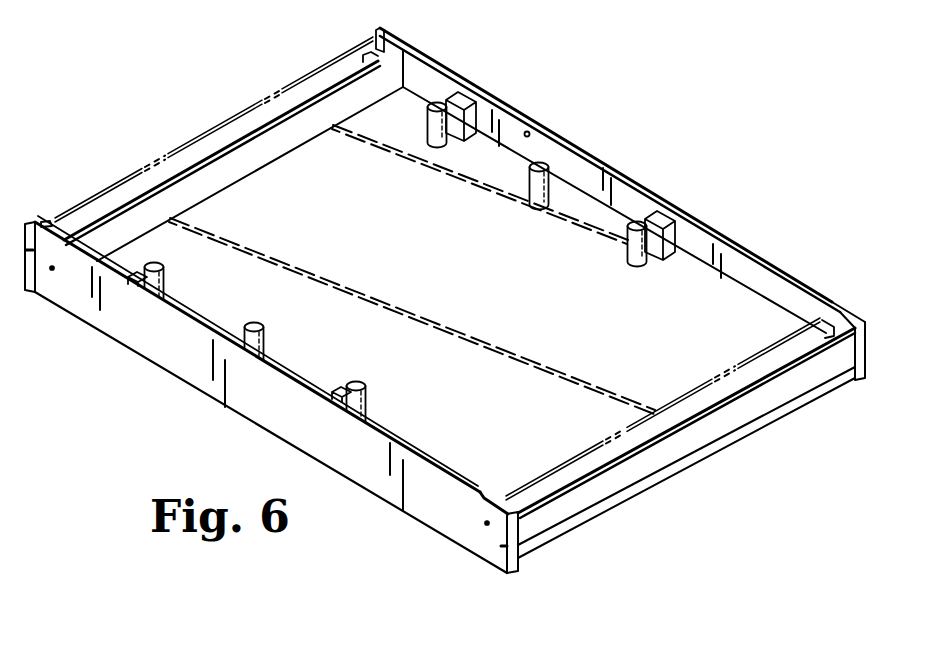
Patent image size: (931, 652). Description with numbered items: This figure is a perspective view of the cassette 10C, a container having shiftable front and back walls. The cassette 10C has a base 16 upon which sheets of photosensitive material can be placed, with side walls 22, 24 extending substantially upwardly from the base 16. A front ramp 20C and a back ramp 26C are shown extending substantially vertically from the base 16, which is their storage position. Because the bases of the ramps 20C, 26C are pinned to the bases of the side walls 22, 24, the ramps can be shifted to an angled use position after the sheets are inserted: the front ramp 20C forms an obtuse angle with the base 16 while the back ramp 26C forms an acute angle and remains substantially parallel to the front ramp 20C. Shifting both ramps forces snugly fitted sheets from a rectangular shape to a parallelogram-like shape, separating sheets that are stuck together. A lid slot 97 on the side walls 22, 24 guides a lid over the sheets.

The cassette 10C is at (679, 120).
The base 16 is at (748, 313).
The front ramp 20C is at (270, 147).
The side wall 22 is at (613, 163).
The side wall 24 is at (185, 360).
The back ramp 26C is at (723, 416).
The lid slot 97 is at (529, 131).